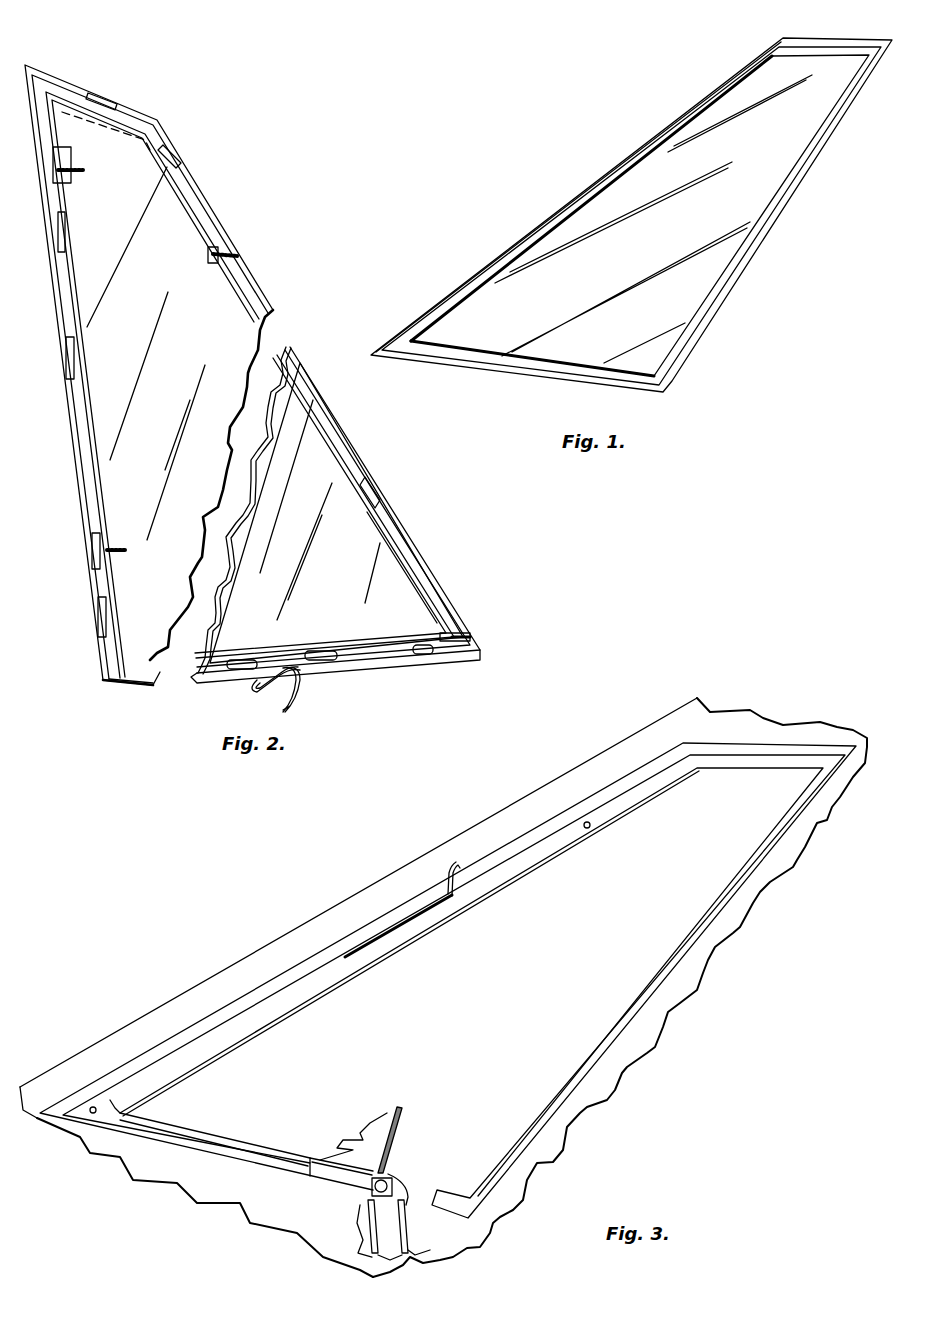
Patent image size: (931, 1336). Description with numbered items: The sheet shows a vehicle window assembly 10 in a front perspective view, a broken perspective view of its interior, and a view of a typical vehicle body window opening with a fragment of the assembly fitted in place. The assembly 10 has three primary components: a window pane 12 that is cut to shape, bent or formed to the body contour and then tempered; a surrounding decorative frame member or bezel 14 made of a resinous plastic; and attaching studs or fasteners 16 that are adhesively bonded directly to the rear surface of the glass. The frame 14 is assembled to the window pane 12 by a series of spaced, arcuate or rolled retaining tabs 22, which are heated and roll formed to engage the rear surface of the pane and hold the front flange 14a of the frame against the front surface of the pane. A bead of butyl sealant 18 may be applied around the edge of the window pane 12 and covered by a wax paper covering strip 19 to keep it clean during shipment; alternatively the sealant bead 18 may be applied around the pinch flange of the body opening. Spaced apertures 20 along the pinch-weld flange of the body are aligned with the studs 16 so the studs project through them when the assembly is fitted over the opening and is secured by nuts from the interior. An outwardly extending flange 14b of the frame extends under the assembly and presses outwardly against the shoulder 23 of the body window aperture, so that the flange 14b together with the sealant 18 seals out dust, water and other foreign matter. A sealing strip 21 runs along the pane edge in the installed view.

In FIG. 1, the window assembly 10 is at (608, 122).
In FIG. 2, the window assembly 10 is at (227, 127).
In FIG. 3, the window assembly 10 is at (410, 1120).
In FIG. 1, the window pane 12 is at (760, 150).
In FIG. 2, the window pane 12 is at (162, 290).
In FIG. 3, the window pane 12 is at (383, 1118).
In FIG. 1, the decorative frame member 14 is at (631, 215).
In FIG. 2, the decorative frame member 14 is at (252, 398).
In FIG. 3, the decorative frame member 14 is at (448, 1021).
In FIG. 1, the front flange 14a is at (706, 301).
In FIG. 3, the front flange 14a is at (330, 1160).
In FIG. 1, the outwardly extending flange 14b is at (776, 219).
In FIG. 2, the outwardly extending flange 14b is at (137, 687).
In FIG. 3, the outwardly extending flange 14b is at (378, 1200).
In FIG. 2, the attaching stud 16 is at (63, 161).
In FIG. 2, the butyl sealant bead 18 is at (257, 682).
In FIG. 3, the butyl sealant bead 18 is at (397, 923).
In FIG. 2, the wax paper covering strip 19 is at (300, 697).
In FIG. 3, the spaced apertures 20 is at (96, 1110).
In FIG. 3, the sealing strip 21 is at (313, 977).
In FIG. 2, the retaining tabs 22 is at (100, 97).
In FIG. 3, the shoulder 23 is at (213, 1155).